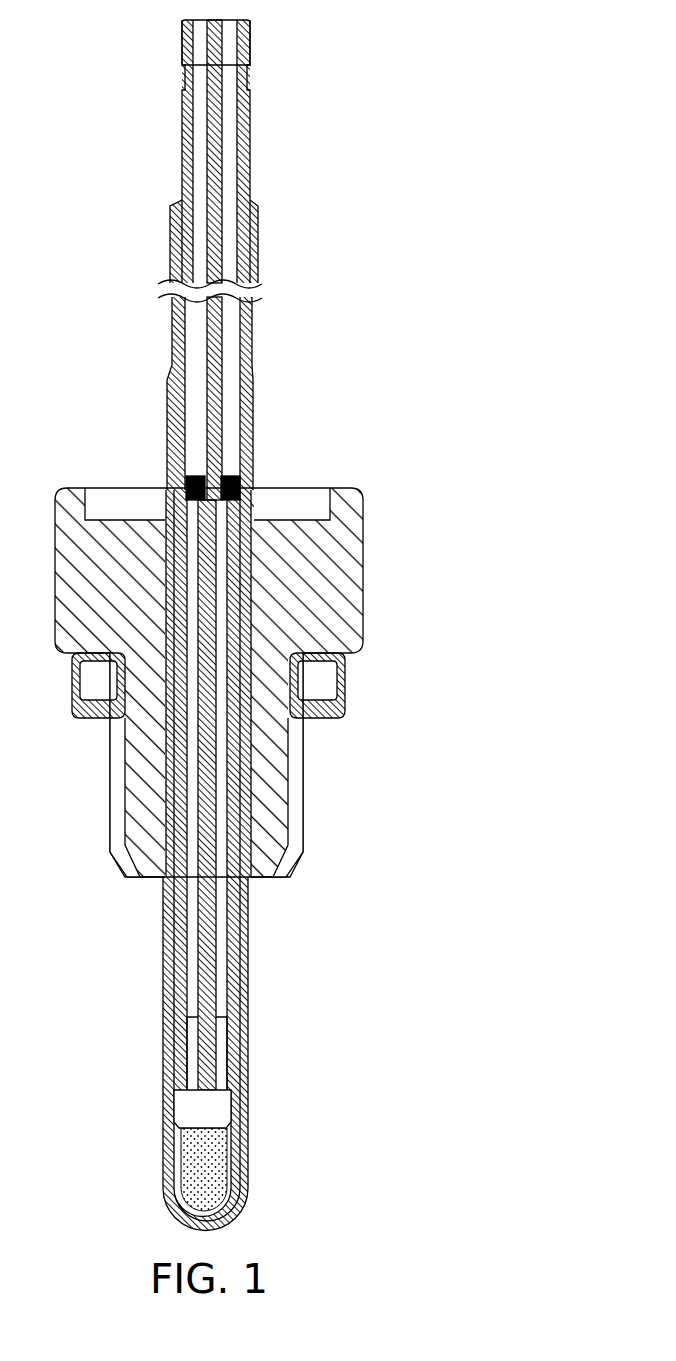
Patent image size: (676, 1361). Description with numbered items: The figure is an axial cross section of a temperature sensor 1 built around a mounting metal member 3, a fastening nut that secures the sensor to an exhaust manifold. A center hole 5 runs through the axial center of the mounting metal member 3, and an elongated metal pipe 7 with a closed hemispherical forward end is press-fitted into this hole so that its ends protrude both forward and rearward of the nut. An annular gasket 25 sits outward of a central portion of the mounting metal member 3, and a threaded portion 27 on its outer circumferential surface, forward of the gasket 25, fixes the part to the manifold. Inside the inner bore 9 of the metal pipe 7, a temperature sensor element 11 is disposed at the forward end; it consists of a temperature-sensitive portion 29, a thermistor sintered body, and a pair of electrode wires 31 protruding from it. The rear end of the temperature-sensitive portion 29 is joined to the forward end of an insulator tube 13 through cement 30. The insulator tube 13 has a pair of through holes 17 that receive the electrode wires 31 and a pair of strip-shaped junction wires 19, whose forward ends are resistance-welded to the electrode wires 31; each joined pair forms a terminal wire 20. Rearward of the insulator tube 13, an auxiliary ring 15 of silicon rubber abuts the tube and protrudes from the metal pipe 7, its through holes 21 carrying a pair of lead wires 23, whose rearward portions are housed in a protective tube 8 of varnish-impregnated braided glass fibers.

The temperature sensor 1 is at (438, 249).
The mounting metal member 3 is at (342, 615).
The center hole 5 is at (238, 537).
The metal pipe 7 is at (253, 440).
The protective tube 8 is at (252, 35).
The inner bore 9 is at (249, 912).
The temperature sensor element 11 is at (277, 1114).
The insulator tube 13 is at (250, 978).
The auxiliary ring 15 is at (248, 218).
The through holes 17 is at (243, 820).
The junction wires 19 is at (248, 790).
The terminal wire 20 is at (243, 1030).
The through holes 21 is at (233, 341).
The lead wires 23 is at (253, 462).
The gasket 25 is at (343, 668).
The threaded portion 27 is at (297, 745).
The temperature-sensitive portion 29 is at (222, 1152).
The cement 30 is at (197, 1108).
The electrode wires 31 is at (223, 1062).